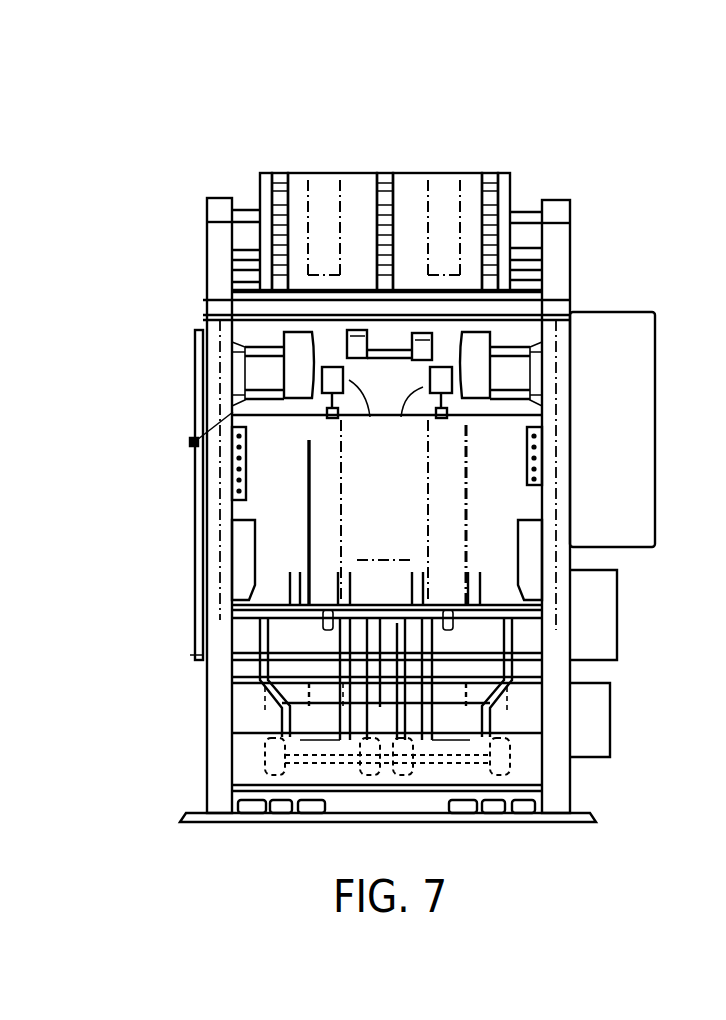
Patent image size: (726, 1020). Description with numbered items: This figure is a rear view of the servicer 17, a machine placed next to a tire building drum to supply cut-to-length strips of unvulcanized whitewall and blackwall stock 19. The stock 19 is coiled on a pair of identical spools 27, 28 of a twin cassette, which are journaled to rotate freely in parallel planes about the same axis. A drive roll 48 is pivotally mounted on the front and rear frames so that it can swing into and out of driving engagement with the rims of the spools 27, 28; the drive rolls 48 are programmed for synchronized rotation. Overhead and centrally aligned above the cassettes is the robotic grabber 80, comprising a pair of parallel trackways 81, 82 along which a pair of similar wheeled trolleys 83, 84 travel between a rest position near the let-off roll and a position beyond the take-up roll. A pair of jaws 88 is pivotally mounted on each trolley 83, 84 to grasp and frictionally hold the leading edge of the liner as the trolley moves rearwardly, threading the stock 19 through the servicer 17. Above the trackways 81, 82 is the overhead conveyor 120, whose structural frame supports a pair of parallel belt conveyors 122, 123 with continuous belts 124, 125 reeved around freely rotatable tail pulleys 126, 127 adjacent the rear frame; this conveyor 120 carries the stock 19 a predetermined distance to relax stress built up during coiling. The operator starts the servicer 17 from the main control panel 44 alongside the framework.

The servicer 17 is at (573, 198).
The whitewall and blackwall stock 19 is at (340, 195).
The spool 27 is at (308, 503).
The spool 28 is at (467, 531).
The main control panel 44 is at (628, 449).
The drive roll 48 is at (272, 600).
The robotic grabber 80 is at (383, 345).
The trackway 81 is at (353, 407).
The trackway 82 is at (422, 407).
The trolley 83 is at (330, 365).
The trolley 84 is at (443, 366).
The jaw 88 is at (330, 417).
The overhead conveyor 120 is at (462, 160).
The belt conveyor 122 is at (478, 173).
The belt conveyor 123 is at (297, 192).
The continuous belt 124 is at (403, 192).
The continuous belt 125 is at (297, 192).
The tail pulley 126 is at (480, 306).
The tail pulley 127 is at (303, 297).